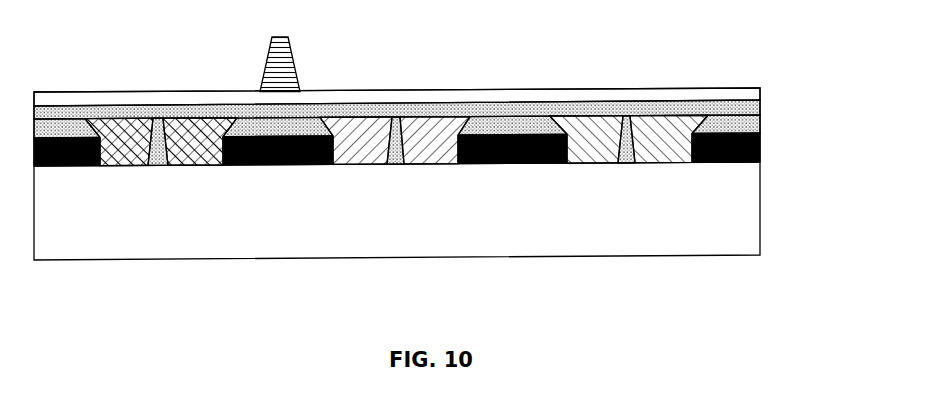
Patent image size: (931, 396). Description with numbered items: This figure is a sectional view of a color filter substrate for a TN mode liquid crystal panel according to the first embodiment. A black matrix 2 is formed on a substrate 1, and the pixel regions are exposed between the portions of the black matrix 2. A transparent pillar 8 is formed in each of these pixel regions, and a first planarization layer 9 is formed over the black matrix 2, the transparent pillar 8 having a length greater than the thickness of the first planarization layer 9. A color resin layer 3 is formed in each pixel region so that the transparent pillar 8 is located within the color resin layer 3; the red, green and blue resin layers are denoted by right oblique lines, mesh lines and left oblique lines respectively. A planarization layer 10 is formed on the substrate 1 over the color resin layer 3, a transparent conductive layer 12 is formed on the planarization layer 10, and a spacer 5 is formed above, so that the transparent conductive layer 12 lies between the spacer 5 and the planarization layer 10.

The substrate 1 is at (760, 213).
The black matrix 2 is at (760, 147).
The color resin layer 3 is at (657, 135).
The spacer 5 is at (282, 67).
The transparent pillar 8 is at (152, 133).
The first planarization layer 9 is at (510, 130).
The planarization layer 10 is at (593, 110).
The transparent conductive layer 12 is at (375, 100).